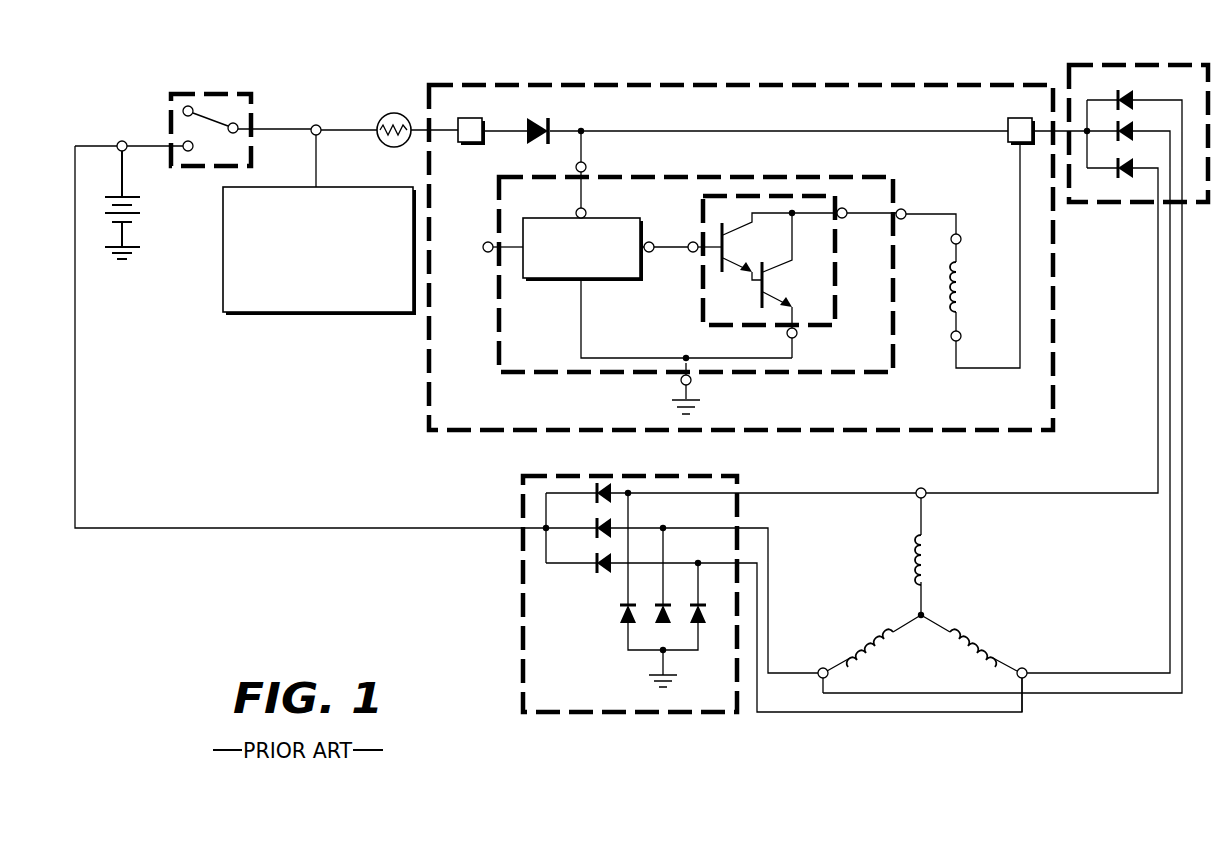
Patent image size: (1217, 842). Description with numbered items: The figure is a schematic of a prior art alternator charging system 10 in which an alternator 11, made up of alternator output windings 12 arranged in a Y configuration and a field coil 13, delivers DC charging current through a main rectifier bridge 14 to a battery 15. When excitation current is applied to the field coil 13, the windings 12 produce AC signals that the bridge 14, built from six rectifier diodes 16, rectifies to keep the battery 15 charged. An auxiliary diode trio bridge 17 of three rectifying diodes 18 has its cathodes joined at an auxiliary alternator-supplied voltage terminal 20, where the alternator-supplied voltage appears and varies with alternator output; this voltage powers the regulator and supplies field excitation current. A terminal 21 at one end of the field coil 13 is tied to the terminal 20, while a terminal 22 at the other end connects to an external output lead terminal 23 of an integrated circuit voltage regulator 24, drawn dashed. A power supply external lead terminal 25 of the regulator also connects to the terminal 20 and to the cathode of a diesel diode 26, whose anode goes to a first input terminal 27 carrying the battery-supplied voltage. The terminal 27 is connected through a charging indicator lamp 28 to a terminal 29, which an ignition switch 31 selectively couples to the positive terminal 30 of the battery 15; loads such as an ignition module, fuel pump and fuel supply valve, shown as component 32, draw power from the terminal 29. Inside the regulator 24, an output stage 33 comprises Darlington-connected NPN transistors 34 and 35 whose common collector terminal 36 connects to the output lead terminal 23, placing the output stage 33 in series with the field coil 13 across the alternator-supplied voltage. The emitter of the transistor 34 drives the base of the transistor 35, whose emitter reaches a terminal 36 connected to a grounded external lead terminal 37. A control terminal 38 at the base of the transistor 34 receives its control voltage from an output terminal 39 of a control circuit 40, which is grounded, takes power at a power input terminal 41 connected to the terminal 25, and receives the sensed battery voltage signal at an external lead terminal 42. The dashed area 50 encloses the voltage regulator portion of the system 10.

The alternator charging system 10 is at (274, 658).
The alternator 11 is at (964, 606).
The alternator output windings 12 is at (934, 559).
The field coil 13 is at (962, 279).
The main rectifier bridge 14 is at (523, 627).
The battery 15 is at (146, 215).
The rectifier diodes 16 is at (594, 500).
The auxiliary diode trio bridge 17 is at (1135, 64).
The rectifying diodes 18 is at (1130, 98).
The auxiliary alternator-supplied voltage terminal 20 is at (1008, 142).
The terminal 21 is at (961, 336).
The terminal 22 is at (961, 239).
The external output lead terminal 23 is at (904, 209).
The integrated circuit voltage regulator 24 is at (717, 177).
The power supply external lead terminal 25 is at (586, 167).
The diesel diode 26 is at (547, 120).
The first input terminal 27 is at (468, 143).
The charging indicator lamp 28 is at (393, 112).
The terminal 29 is at (317, 124).
The positive terminal 30 is at (122, 141).
The ignition switch 31 is at (198, 93).
The component 32 is at (320, 316).
The output stage 33 is at (839, 250).
The transistor 34 is at (735, 248).
The transistor 35 is at (778, 283).
The terminal 36 is at (847, 212).
The external lead terminal 37 is at (682, 382).
The control terminal 38 is at (691, 246).
The output terminal 39 is at (652, 252).
The control circuit 40 is at (560, 279).
The power input terminal 41 is at (589, 213).
The external lead terminal 42 is at (483, 247).
The dashed area 50 is at (732, 84).